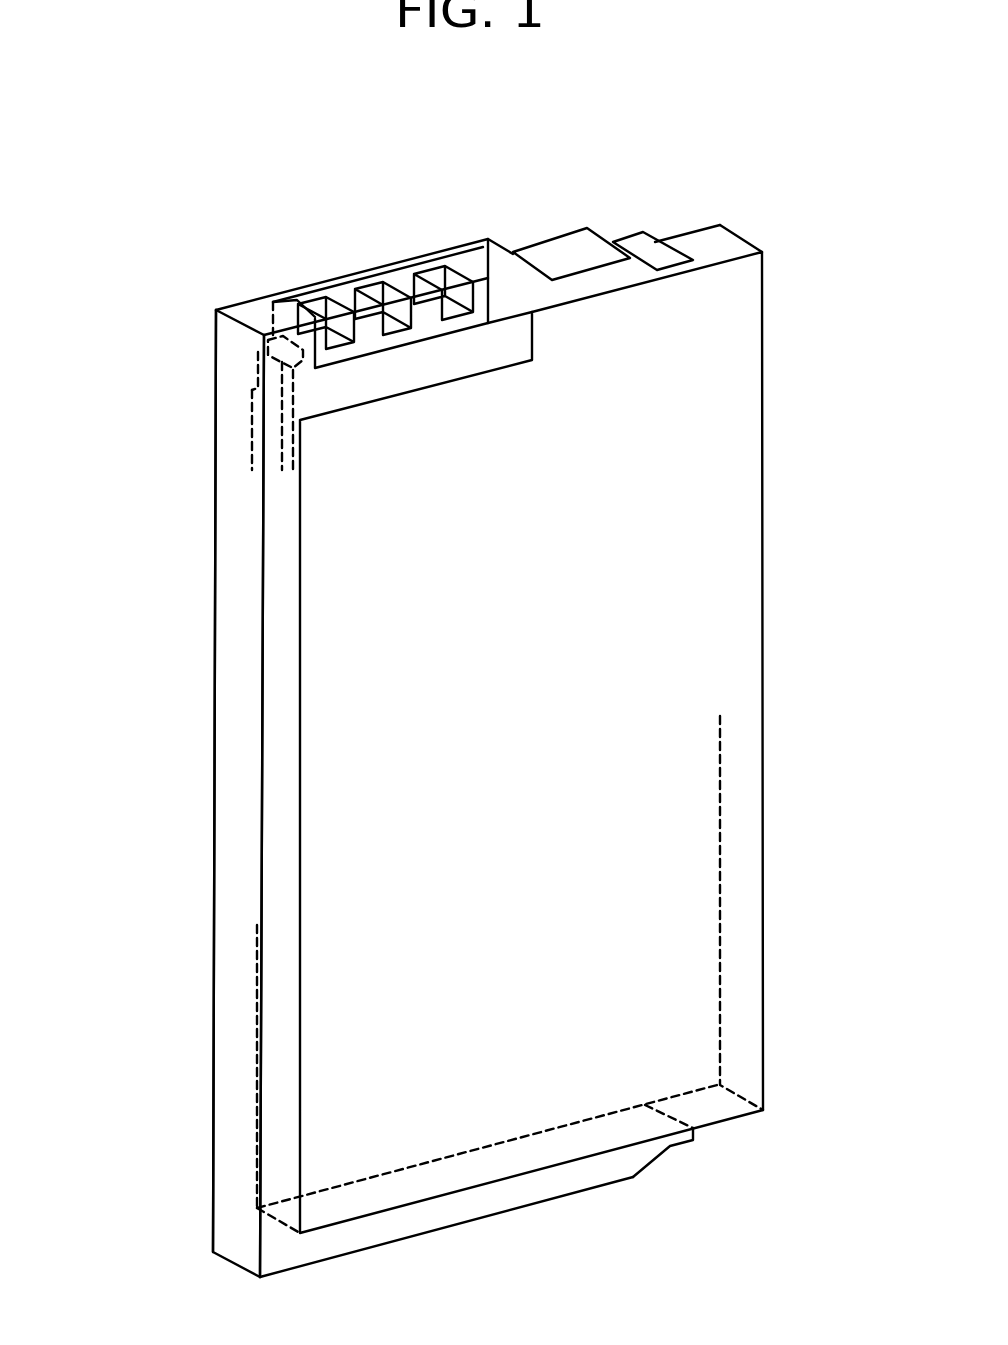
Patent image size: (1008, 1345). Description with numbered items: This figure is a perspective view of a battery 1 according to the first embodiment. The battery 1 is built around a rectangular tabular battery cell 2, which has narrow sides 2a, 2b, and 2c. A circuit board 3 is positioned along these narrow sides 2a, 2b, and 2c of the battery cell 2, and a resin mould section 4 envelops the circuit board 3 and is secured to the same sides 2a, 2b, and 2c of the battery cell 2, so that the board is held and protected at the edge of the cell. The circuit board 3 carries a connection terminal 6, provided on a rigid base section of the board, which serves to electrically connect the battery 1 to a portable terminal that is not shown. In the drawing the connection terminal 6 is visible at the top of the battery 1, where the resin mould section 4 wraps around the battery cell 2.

The battery 1 is at (168, 314).
The battery cell 2 is at (750, 498).
The narrow side 2a is at (270, 1103).
The narrow side 2b is at (692, 248).
The narrow side 2c is at (463, 1175).
The circuit board 3 is at (255, 437).
The resin mould section 4 is at (247, 673).
The connection terminal 6 is at (346, 292).